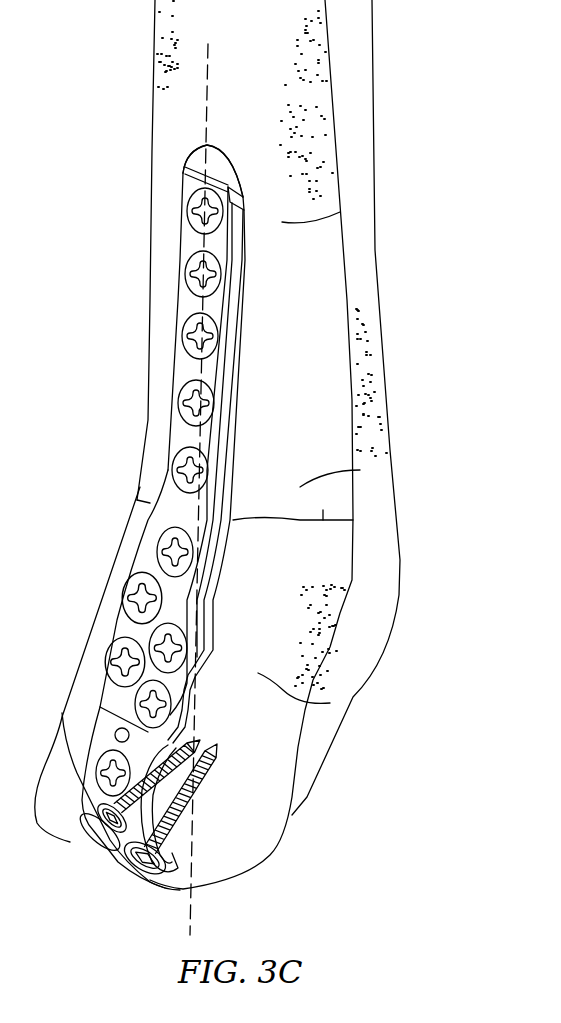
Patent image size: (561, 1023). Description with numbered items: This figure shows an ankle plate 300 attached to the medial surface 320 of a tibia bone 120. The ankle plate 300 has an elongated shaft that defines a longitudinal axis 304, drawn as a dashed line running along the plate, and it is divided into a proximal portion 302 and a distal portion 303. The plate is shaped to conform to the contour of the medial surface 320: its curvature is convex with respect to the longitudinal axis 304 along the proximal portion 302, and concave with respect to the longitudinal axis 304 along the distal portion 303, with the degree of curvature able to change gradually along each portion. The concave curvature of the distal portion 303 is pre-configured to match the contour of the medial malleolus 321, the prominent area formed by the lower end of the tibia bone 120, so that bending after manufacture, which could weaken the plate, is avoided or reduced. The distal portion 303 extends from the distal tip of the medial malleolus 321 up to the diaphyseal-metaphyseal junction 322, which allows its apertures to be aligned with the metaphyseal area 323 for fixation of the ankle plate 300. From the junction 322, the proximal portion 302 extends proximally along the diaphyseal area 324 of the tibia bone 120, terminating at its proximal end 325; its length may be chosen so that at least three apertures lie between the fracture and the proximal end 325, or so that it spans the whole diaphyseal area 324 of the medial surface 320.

The tibia bone 120 is at (363, 273).
The ankle plate 300 is at (240, 540).
The proximal portion 302 is at (207, 143).
The distal portion 303 is at (150, 503).
The longitudinal axis 304 is at (191, 913).
The medial surface 320 is at (360, 470).
The medial malleolus 321 is at (177, 838).
The diaphyseal-metaphyseal junction 322 is at (323, 520).
The metaphyseal area 323 is at (330, 703).
The diaphyseal area 324 is at (340, 212).
The proximal end 325 is at (158, 146).